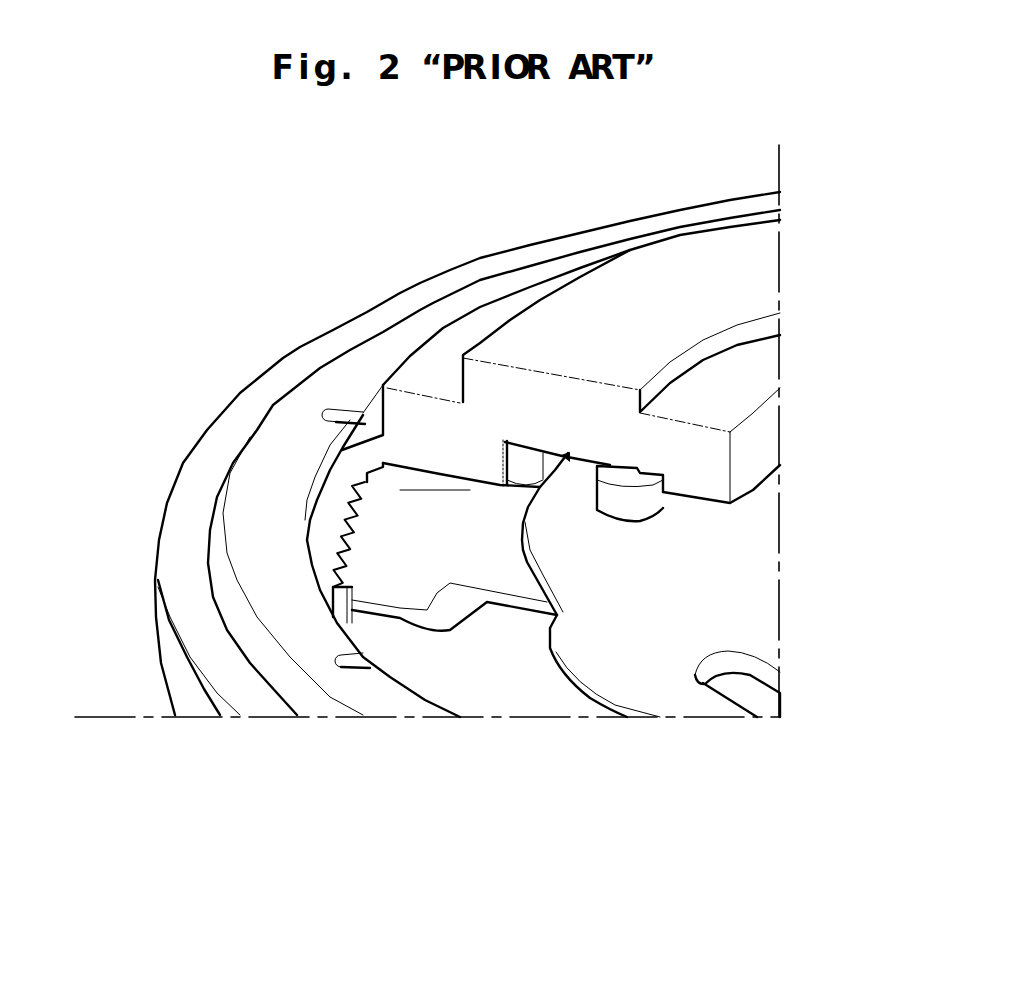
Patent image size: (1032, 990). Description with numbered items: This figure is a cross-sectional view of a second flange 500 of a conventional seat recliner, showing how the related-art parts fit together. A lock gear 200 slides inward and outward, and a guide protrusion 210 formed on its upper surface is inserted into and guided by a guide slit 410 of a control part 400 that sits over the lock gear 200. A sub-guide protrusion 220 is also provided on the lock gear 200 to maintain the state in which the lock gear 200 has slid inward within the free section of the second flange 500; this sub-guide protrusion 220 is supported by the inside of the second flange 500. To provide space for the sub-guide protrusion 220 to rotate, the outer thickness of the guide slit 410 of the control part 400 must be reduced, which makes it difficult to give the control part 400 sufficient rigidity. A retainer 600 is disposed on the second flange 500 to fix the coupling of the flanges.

The lock gear 200 is at (428, 607).
The guide protrusion 210 is at (650, 507).
The sub-guide protrusion 220 is at (523, 465).
The control part 400 is at (758, 613).
The guide slit 410 is at (748, 676).
The second flange 500 is at (752, 273).
The retainer 600 is at (420, 284).